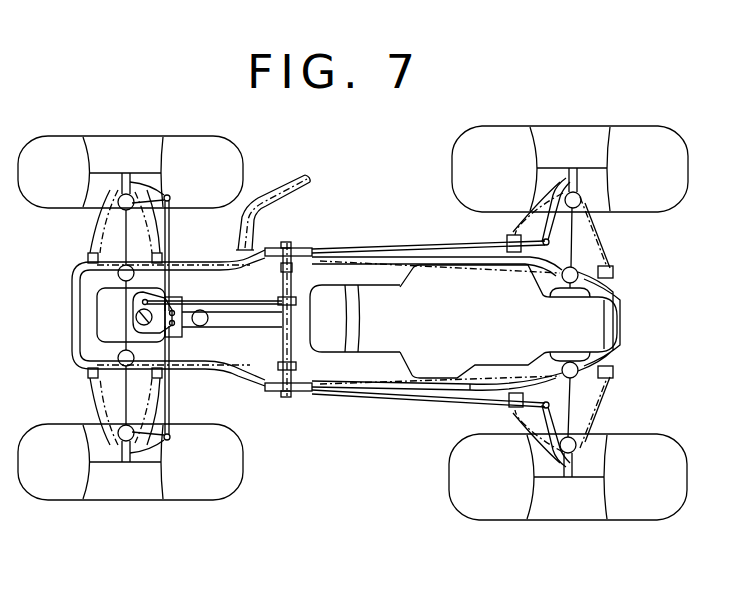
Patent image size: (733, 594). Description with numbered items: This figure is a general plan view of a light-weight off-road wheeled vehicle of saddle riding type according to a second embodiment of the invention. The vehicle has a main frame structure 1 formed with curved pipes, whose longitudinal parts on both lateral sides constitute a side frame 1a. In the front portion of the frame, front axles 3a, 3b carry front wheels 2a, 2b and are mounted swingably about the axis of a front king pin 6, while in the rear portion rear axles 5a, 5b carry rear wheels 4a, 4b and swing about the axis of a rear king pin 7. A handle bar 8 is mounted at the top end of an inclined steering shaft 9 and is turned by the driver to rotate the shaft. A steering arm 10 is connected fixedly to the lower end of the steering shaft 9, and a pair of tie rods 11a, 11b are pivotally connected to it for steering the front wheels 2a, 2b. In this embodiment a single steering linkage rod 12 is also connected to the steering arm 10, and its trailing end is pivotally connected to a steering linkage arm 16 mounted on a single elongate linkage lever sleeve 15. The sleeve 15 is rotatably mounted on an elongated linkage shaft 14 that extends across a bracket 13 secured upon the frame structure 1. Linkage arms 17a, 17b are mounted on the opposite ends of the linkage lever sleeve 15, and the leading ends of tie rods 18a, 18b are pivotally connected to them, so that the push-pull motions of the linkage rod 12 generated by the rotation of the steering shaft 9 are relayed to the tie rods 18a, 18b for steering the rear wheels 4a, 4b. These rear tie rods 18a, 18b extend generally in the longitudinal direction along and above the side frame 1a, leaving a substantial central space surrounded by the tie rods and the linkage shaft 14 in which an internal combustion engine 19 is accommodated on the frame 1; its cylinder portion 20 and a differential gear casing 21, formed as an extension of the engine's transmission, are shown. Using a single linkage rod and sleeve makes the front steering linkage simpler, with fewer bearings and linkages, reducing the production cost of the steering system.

The main frame structure 1 is at (353, 245).
The side frame 1a is at (363, 384).
The front wheel 2a is at (56, 494).
The front wheel 2b is at (58, 143).
The front axle 3a is at (121, 455).
The front axle 3b is at (121, 179).
The rear wheel 4a is at (485, 512).
The rear wheel 4b is at (498, 137).
The rear axle 5a is at (583, 465).
The rear axle 5b is at (583, 180).
The front king pin 6 is at (122, 200).
The rear king pin 7 is at (590, 427).
The handle bar 8 is at (287, 195).
The steering shaft 9 is at (135, 320).
The steering arm 10 is at (133, 315).
The tie rod 11a is at (171, 394).
The tie rod 11b is at (171, 234).
The steering linkage rod 12 is at (186, 306).
The bracket 13 is at (269, 247).
The linkage shaft 14 is at (281, 352).
The linkage lever sleeve 15 is at (293, 277).
The steering linkage arm 16 is at (296, 298).
The linkage arm 17a is at (320, 372).
The linkage arm 17b is at (281, 266).
The tie rod 18a is at (396, 393).
The tie rod 18b is at (386, 248).
The internal combustion engine 19 is at (463, 372).
The cylinder portion 20 is at (405, 322).
The differential gear casing 21 is at (604, 322).